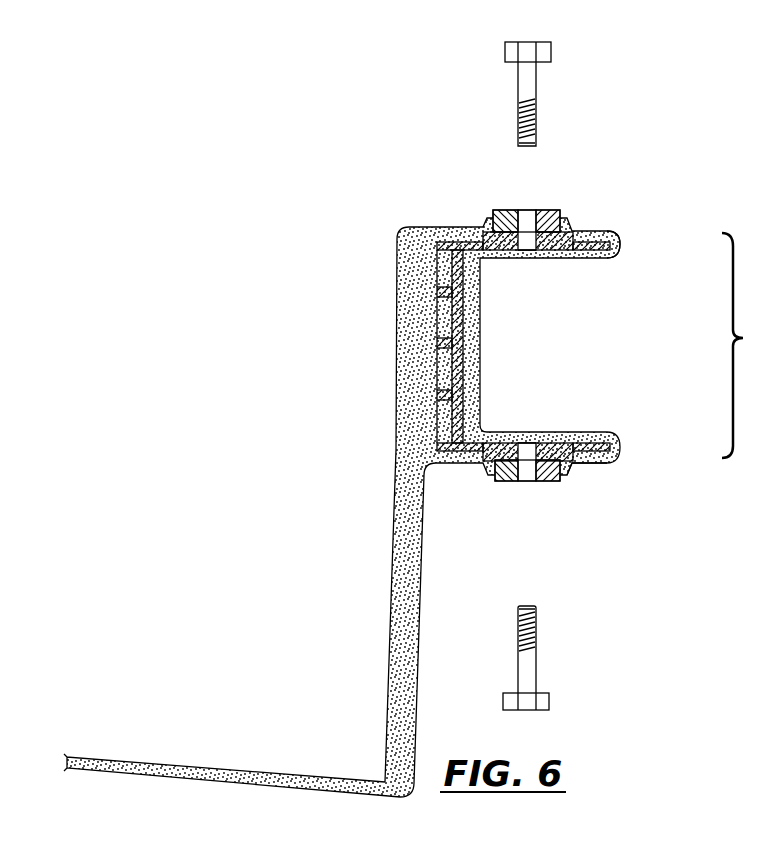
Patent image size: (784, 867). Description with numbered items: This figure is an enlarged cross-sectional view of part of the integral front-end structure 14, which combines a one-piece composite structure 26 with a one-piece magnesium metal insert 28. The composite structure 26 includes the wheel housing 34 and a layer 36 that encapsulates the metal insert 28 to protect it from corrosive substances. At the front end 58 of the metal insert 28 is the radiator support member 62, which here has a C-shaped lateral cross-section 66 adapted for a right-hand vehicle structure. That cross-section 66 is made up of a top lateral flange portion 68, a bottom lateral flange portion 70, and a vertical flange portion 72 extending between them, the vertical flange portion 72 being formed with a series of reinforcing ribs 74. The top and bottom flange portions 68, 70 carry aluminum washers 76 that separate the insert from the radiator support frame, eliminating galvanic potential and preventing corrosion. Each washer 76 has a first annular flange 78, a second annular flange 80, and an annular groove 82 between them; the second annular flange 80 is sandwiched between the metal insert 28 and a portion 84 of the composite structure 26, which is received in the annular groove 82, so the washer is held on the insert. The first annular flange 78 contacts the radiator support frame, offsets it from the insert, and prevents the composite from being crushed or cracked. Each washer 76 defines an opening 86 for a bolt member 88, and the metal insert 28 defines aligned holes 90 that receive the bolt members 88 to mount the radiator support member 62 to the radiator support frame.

The integral front-end structure 14 is at (422, 419).
The one-piece composite structure 26 is at (382, 708).
The one-piece metal insert 28 is at (611, 463).
The wheel housing 34 is at (253, 770).
The layer 36 is at (462, 228).
The front end 58 is at (523, 369).
The radiator support member 62 is at (616, 258).
The C-shaped lateral cross-section 66 is at (751, 345).
The top lateral flange portion 68 is at (598, 230).
The bottom lateral flange portion 70 is at (583, 461).
The vertical flange portion 72 is at (463, 368).
The reinforcing ribs 74 is at (433, 397).
The washers 76 is at (497, 207).
The first annular flange 78 is at (562, 215).
The second annular flange 80 is at (557, 248).
The annular groove 82 is at (554, 219).
The portion of one-piece composite structure 84 is at (515, 208).
The opening 86 is at (523, 250).
The bolt member 88 is at (537, 77).
The holes 90 is at (531, 250).